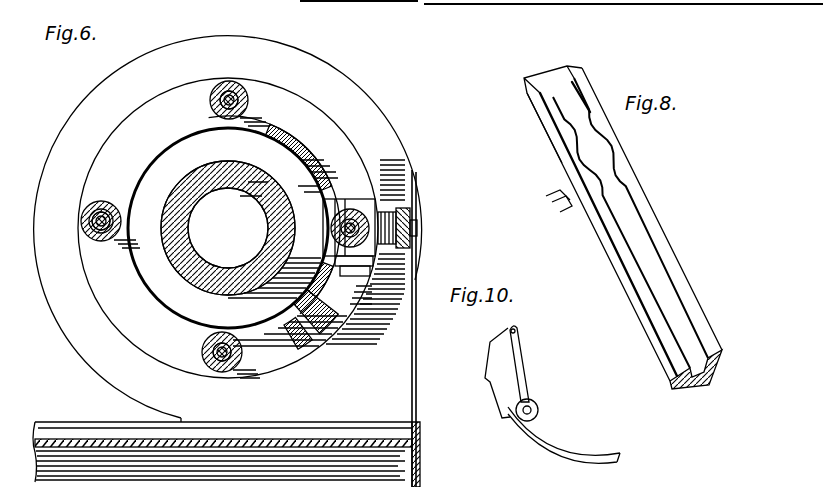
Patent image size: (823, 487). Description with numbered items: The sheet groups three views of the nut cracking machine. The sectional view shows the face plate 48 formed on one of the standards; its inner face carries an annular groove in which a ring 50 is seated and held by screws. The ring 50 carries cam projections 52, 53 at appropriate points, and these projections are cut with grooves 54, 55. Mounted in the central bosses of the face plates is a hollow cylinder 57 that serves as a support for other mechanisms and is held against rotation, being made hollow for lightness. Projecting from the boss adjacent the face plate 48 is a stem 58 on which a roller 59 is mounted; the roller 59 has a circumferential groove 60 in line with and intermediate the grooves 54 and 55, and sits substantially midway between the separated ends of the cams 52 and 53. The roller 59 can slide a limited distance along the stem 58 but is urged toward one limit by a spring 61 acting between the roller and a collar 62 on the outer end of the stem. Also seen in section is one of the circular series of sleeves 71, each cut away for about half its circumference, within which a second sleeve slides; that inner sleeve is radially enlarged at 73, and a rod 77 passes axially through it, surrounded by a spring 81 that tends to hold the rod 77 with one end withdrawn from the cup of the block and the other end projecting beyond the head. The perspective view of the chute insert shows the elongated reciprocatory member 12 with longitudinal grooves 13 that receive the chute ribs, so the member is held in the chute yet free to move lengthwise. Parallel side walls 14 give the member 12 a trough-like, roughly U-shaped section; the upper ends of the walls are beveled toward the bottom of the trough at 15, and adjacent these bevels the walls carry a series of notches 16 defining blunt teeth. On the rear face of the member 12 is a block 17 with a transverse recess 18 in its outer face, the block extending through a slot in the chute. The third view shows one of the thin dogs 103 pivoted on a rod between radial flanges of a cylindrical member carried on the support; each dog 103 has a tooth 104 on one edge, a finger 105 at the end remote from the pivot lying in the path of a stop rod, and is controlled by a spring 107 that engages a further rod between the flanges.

In FIG. 6, the face plate 48 is at (92, 100).
In FIG. 6, the ring 50 is at (228, 228).
In FIG. 6, the cam projection 52 is at (322, 128).
In FIG. 6, the groove 54 is at (283, 118).
In FIG. 6, the cylinder 57 is at (220, 232).
In FIG. 6, the radially enlarged portion 73 is at (212, 108).
In FIG. 6, the spring 81 is at (236, 90).
In FIG. 6, the rod 77 is at (86, 224).
In FIG. 6, the sleeve 71 is at (332, 238).
In FIG. 6, the spring 61 is at (382, 214).
In FIG. 6, the collar 62 is at (406, 208).
In FIG. 6, the stem 58 is at (416, 228).
In FIG. 6, the roller 59 is at (352, 262).
In FIG. 6, the circumferential groove 60 is at (358, 272).
In FIG. 6, the cam projection 53 is at (318, 296).
In FIG. 6, the groove 55 is at (312, 312).
In FIG. 8, the reciprocatory member 12 is at (546, 146).
In FIG. 8, the longitudinal grooves 13 is at (672, 380).
In FIG. 8, the side walls 14 is at (668, 298).
In FIG. 8, the bevel portions 15 is at (578, 108).
In FIG. 8, the notches 16 is at (580, 150).
In FIG. 8, the block 17 is at (548, 194).
In FIG. 8, the transverse recess 18 is at (556, 206).
In FIG. 10, the dog 103 is at (506, 400).
In FIG. 10, the tooth 104 is at (492, 366).
In FIG. 10, the finger 105 is at (518, 331).
In FIG. 10, the spring 107 is at (558, 448).